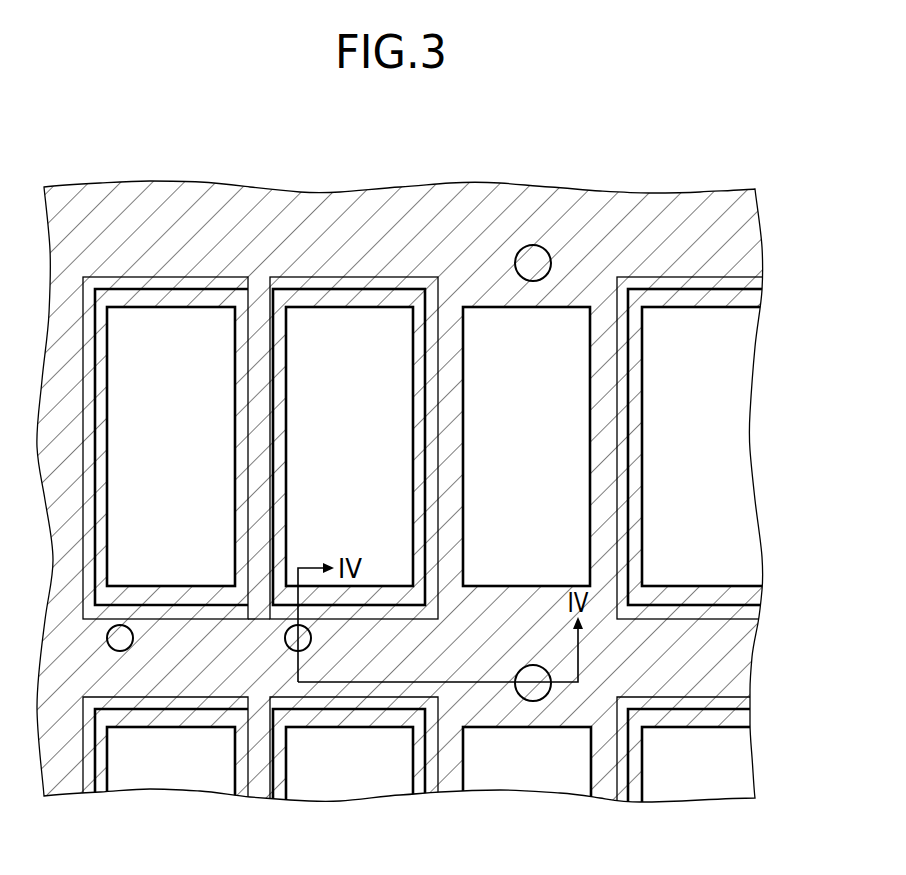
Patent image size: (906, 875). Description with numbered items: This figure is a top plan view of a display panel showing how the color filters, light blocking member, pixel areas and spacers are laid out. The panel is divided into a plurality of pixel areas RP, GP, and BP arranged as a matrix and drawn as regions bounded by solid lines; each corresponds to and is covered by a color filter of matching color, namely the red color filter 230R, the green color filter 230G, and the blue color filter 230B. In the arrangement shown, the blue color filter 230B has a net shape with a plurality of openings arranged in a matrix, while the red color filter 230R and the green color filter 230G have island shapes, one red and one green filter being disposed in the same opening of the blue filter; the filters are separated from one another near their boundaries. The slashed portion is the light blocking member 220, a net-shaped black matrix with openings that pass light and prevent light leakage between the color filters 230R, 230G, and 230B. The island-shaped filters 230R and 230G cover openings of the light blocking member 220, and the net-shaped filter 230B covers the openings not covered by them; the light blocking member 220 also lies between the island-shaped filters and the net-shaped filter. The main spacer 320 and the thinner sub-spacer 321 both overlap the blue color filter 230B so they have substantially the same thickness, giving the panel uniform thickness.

The light blocking member 220 is at (267, 335).
The red color filter 230R is at (137, 290).
The green color filter 230G is at (318, 290).
The blue color filter 230B is at (522, 460).
The red pixel area RP is at (194, 303).
The green pixel area GP is at (380, 303).
The blue pixel area BP is at (484, 303).
The sub-spacer 321 is at (124, 651).
The main spacer 320 is at (547, 700).